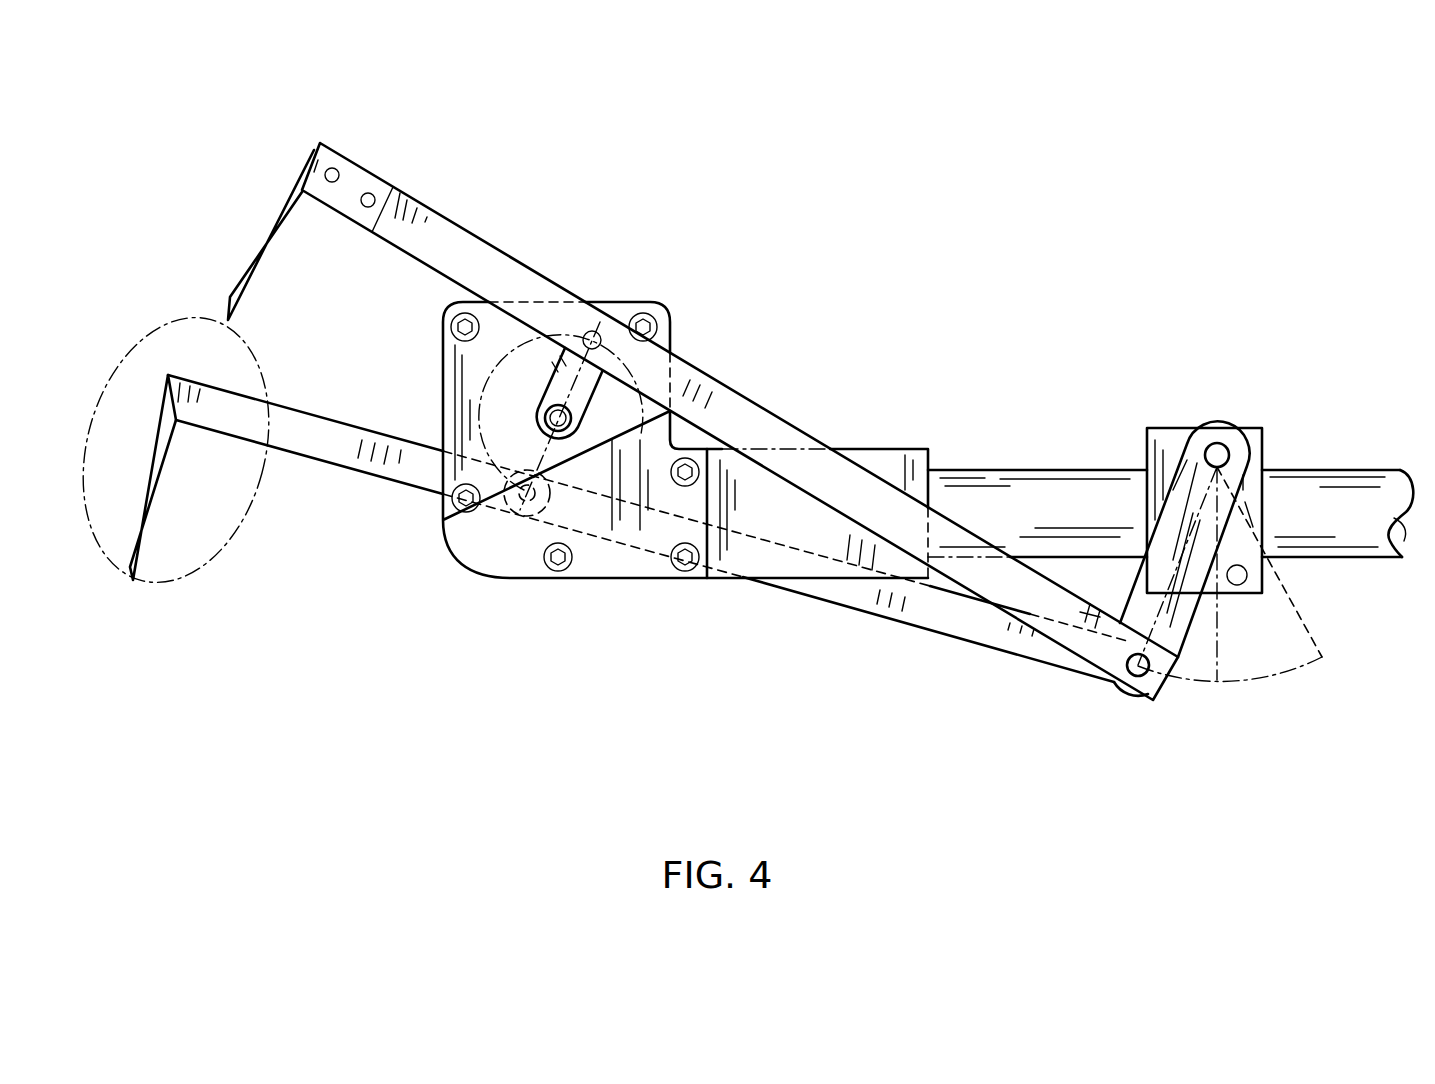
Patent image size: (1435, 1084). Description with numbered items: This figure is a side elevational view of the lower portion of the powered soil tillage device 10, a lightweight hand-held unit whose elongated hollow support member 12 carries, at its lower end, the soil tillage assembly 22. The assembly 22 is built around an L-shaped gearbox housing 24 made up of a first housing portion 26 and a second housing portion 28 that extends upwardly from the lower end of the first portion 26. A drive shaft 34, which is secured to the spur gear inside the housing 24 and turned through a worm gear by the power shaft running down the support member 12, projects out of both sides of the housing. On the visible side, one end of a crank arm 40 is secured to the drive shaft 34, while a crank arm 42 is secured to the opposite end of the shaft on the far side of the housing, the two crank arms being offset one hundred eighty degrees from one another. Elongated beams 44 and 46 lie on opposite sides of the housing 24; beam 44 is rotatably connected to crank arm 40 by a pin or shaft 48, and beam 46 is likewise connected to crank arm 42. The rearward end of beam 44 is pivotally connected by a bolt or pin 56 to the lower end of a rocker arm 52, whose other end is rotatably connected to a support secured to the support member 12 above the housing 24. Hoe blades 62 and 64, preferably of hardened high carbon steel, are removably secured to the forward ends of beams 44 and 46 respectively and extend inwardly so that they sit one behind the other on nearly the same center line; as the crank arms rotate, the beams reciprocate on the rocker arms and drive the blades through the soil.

The powered soil tillage device 10 is at (987, 322).
The elongated hollow support member 12 is at (1364, 455).
The soil tillage assembly 22 is at (908, 404).
The gearbox housing 24 is at (676, 322).
The first housing portion 26 is at (892, 450).
The second housing portion 28 is at (588, 338).
The drive shaft 34 is at (556, 432).
The crank arm 40 is at (574, 398).
The crank arm 42 is at (535, 445).
The elongated beam 44 is at (455, 232).
The elongated beam 46 is at (935, 622).
The pin or shaft 48 is at (598, 336).
The rocker arm 52 is at (1170, 545).
The bolt or pin 56 is at (1147, 673).
The hoe blade 62 is at (268, 253).
The hoe blade 64 is at (160, 465).